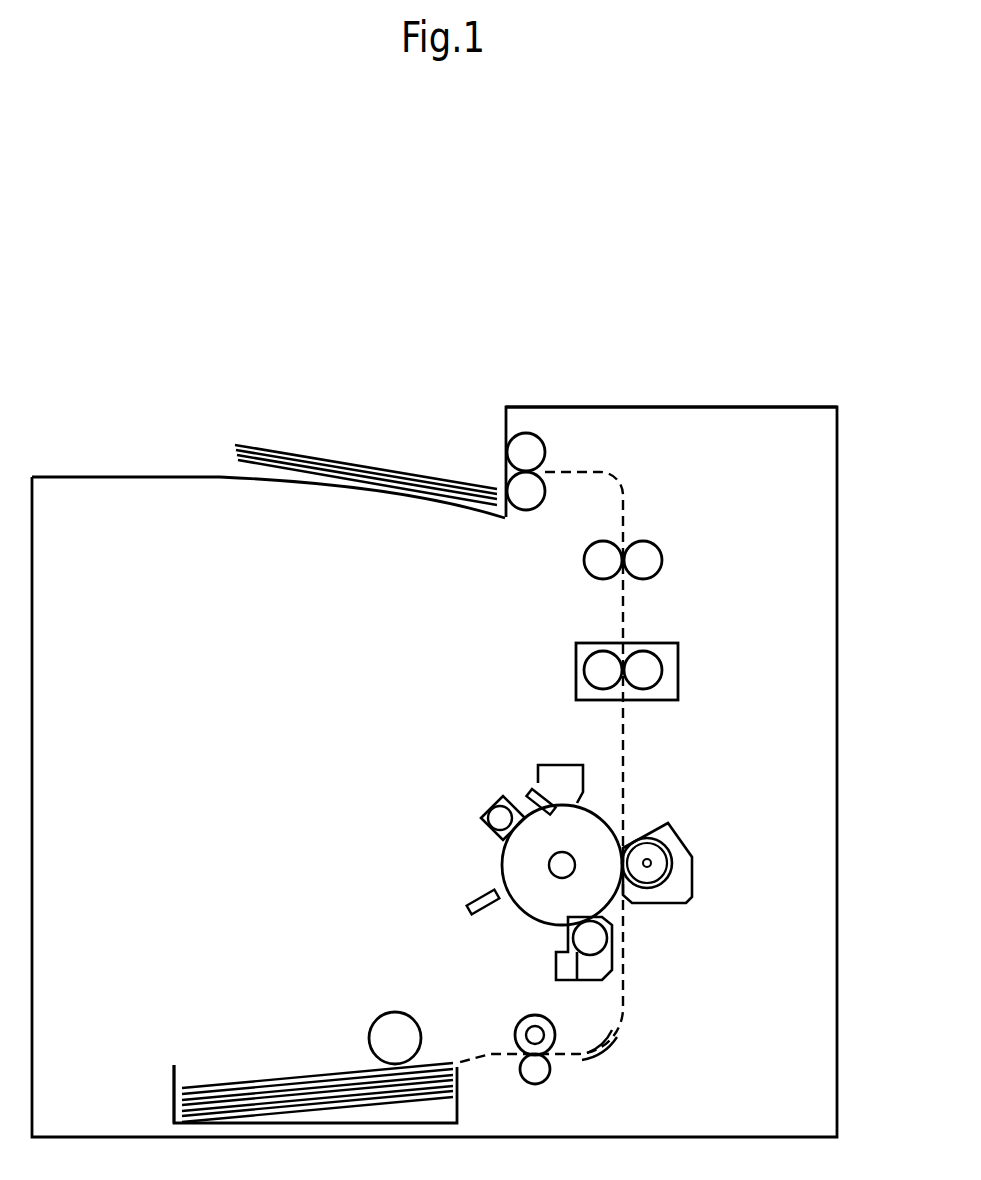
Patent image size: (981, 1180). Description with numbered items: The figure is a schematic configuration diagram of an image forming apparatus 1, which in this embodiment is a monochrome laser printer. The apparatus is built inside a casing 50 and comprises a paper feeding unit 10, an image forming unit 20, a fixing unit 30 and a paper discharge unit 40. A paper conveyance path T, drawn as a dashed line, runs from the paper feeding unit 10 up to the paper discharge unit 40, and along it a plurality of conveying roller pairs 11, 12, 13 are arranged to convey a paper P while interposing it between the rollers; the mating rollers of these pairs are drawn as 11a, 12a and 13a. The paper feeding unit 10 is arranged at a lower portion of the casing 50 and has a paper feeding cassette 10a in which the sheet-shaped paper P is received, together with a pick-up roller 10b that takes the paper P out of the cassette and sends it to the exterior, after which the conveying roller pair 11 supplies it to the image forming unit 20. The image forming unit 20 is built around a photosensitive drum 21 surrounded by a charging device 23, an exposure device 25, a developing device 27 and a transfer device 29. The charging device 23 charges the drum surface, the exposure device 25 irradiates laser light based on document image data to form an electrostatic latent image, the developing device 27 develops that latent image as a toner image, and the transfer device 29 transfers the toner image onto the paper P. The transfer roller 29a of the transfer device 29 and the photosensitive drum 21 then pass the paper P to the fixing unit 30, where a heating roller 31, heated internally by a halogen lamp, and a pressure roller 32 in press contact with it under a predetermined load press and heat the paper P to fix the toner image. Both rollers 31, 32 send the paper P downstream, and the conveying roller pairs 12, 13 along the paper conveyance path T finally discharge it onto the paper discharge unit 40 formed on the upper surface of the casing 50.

The image forming apparatus 1 is at (113, 421).
The paper feeding unit 10 is at (265, 1012).
The paper feeding cassette 10a is at (173, 1093).
The pick-up roller 10b is at (385, 1012).
The conveying roller pair 11 is at (510, 1043).
The feed pinch roller 11a is at (537, 1084).
The conveying roller pair 12 is at (650, 535).
The conveying pinch roller 12a is at (600, 577).
The conveying roller pair 13 is at (553, 448).
The discharge pinch roller 13a is at (533, 512).
The image forming unit 20 is at (588, 856).
The photosensitive drum 21 is at (523, 917).
The charging device 23 is at (495, 808).
The exposure device 25 is at (467, 908).
The developing device 27 is at (588, 980).
The transfer device 29 is at (687, 846).
The transfer roller 29a is at (670, 843).
The fixing unit 30 is at (647, 640).
The heating roller 31 is at (587, 680).
The pressure roller 32 is at (638, 688).
The paper discharge unit 40 is at (387, 490).
The casing 50 is at (732, 407).
The paper P is at (253, 443).
The paper conveyance path T is at (583, 472).